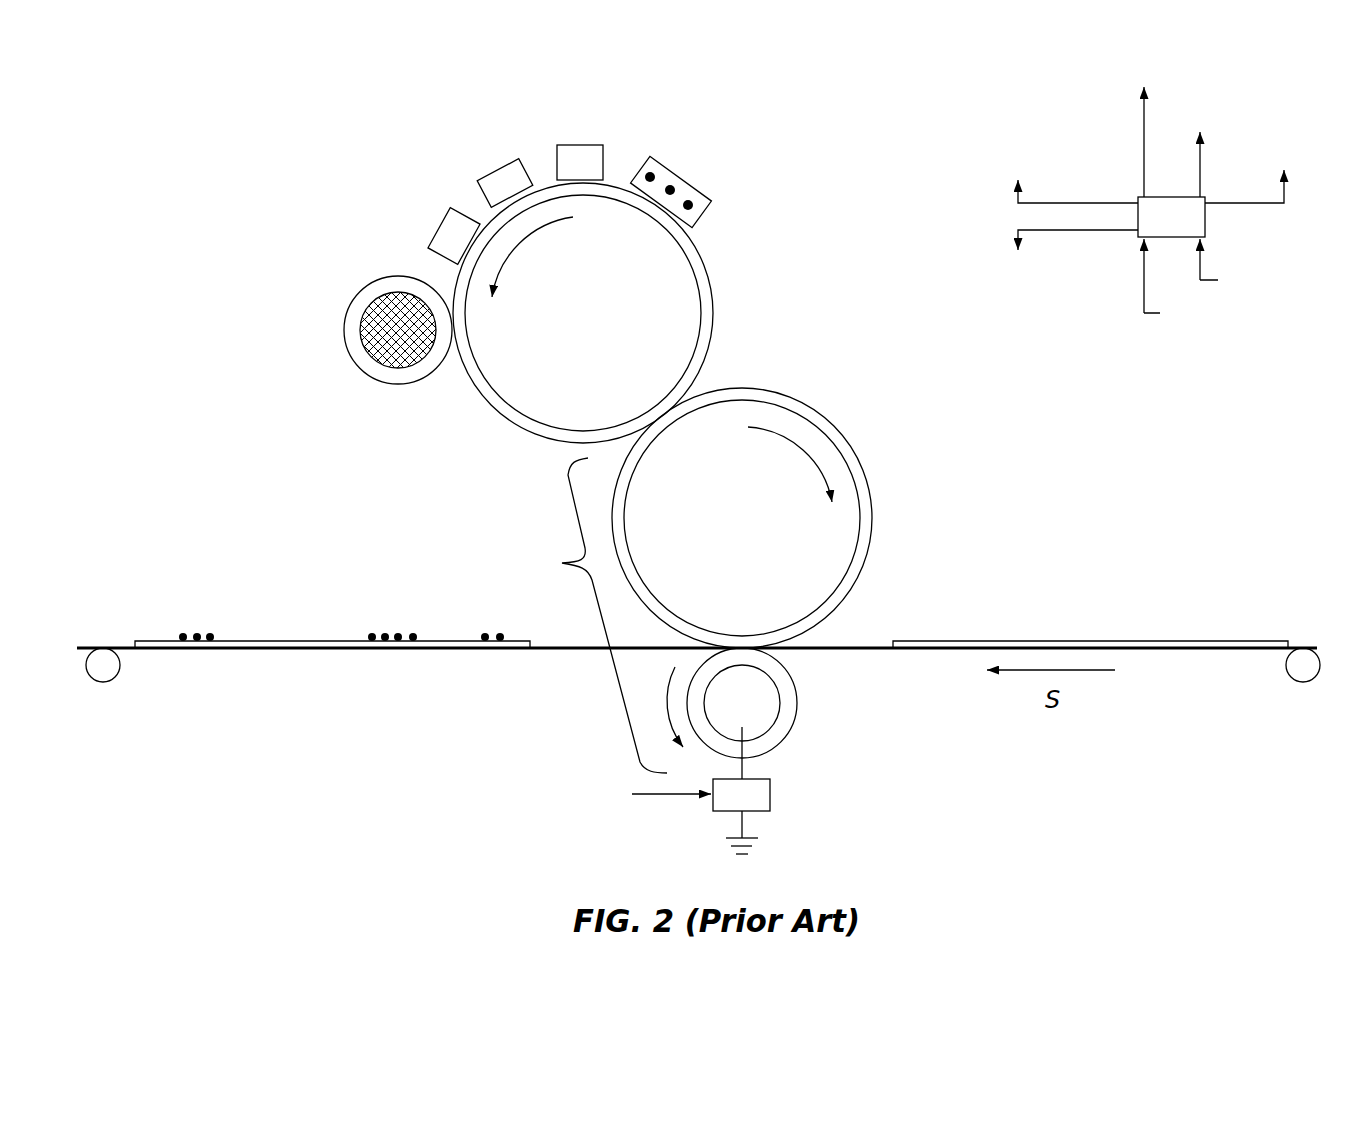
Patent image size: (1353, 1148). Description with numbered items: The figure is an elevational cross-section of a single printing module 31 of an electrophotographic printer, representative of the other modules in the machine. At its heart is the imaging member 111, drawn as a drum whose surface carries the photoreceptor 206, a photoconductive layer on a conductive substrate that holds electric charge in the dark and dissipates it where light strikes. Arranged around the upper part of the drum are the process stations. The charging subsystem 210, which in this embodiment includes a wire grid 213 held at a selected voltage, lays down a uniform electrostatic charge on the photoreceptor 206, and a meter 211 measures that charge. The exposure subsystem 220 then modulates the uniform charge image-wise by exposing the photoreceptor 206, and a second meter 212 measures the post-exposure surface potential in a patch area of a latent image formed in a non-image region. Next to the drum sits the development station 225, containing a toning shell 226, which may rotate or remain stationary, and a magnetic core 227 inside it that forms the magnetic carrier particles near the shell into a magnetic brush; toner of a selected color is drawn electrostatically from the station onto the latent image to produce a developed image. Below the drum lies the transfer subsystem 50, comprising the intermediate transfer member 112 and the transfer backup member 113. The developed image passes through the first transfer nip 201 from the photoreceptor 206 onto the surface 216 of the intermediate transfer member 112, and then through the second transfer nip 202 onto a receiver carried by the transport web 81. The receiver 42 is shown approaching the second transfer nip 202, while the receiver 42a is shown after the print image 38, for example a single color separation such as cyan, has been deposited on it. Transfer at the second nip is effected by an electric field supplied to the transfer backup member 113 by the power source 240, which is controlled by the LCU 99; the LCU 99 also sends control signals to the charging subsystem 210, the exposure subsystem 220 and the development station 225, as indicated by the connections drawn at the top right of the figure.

The printing module 31 is at (632, 419).
The imaging member 111 is at (737, 298).
The photoreceptor 206 is at (700, 256).
The intermediate transfer member 112 is at (894, 510).
The surface of intermediate transfer member 216 is at (850, 441).
The transfer backup member 113 is at (809, 708).
The first transfer nip 201 is at (702, 385).
The second transfer nip 202 is at (807, 642).
The charging subsystem 210 is at (682, 177).
The wire grid 213 is at (648, 172).
The meter 211 is at (578, 144).
The exposure subsystem 220 is at (496, 168).
The meter 212 is at (440, 222).
The development station 225 is at (356, 290).
The toning shell 226 is at (345, 330).
The magnetic core 227 is at (398, 292).
The power source 240 is at (770, 793).
The LCU 99 is at (1205, 214).
The transfer subsystem 50 is at (593, 615).
The transport web 81 is at (80, 645).
The receiver 42 is at (1090, 640).
The receiver 42a is at (275, 640).
The print image 38 is at (398, 636).